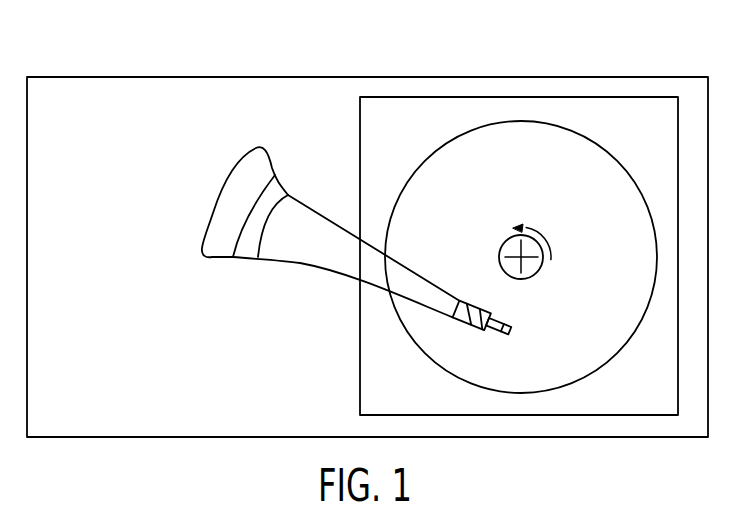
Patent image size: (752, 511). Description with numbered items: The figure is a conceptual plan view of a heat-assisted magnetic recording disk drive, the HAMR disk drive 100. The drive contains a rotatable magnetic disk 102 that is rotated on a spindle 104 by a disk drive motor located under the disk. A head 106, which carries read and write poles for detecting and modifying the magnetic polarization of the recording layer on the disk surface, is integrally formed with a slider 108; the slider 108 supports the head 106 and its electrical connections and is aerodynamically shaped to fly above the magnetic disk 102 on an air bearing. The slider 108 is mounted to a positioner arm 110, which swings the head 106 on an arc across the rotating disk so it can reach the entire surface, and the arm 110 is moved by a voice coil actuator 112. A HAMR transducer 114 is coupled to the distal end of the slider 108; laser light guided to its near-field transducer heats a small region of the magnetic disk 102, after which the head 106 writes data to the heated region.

The HAMR disk drive 100 is at (673, 69).
The magnetic disk 102 is at (594, 160).
The spindle 104 is at (533, 265).
The head 106 is at (468, 302).
The slider 108 is at (470, 322).
The positioner arm 110 is at (305, 258).
The voice coil actuator 112 is at (213, 218).
The HAMR transducer 114 is at (509, 331).